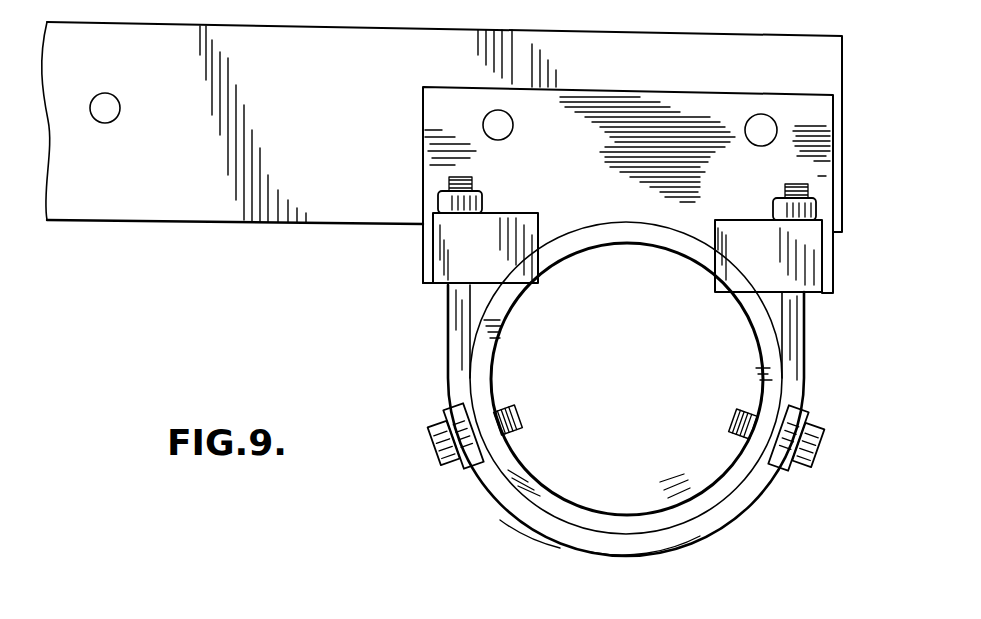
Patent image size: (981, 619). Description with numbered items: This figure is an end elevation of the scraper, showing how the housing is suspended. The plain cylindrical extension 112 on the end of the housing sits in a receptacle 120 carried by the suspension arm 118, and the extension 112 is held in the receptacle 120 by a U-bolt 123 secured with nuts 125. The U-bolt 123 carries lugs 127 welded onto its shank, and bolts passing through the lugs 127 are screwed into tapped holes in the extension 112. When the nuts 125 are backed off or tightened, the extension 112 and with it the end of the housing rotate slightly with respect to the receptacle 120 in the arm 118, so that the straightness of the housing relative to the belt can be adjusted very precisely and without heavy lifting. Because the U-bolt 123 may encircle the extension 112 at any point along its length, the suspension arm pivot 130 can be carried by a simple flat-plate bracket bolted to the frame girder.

The cylindrical extension 112 is at (482, 378).
The suspension arm 118 is at (258, 219).
The receptacle 120 is at (585, 205).
The U-bolt 123 is at (488, 490).
The nuts 125 is at (484, 200).
The lugs 127 is at (450, 408).
The suspension arm pivot 130 is at (100, 118).